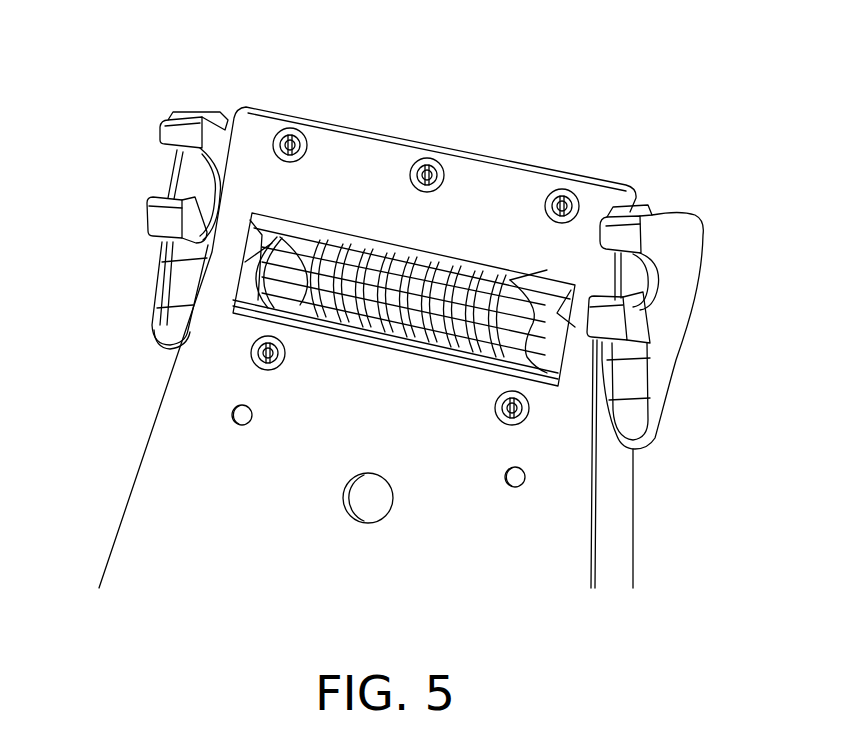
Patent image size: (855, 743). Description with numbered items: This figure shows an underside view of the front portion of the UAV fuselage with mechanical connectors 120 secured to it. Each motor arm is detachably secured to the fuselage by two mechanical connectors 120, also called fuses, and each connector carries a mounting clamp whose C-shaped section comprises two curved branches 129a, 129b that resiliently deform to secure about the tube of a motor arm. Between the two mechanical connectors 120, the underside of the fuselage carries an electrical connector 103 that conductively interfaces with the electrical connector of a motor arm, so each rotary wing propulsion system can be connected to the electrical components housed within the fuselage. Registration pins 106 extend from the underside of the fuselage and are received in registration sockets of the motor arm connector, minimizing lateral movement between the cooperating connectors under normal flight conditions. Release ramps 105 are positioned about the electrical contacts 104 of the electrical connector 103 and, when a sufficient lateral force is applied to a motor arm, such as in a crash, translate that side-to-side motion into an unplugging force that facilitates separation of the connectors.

The electrical connector 103 is at (250, 310).
The electrical contacts 104 is at (394, 350).
The release ramps 105 is at (350, 290).
The registration pins 106 is at (289, 140).
The mechanical connector 120 is at (158, 278).
The curved branch 129a is at (182, 128).
The curved branch 129b is at (157, 213).